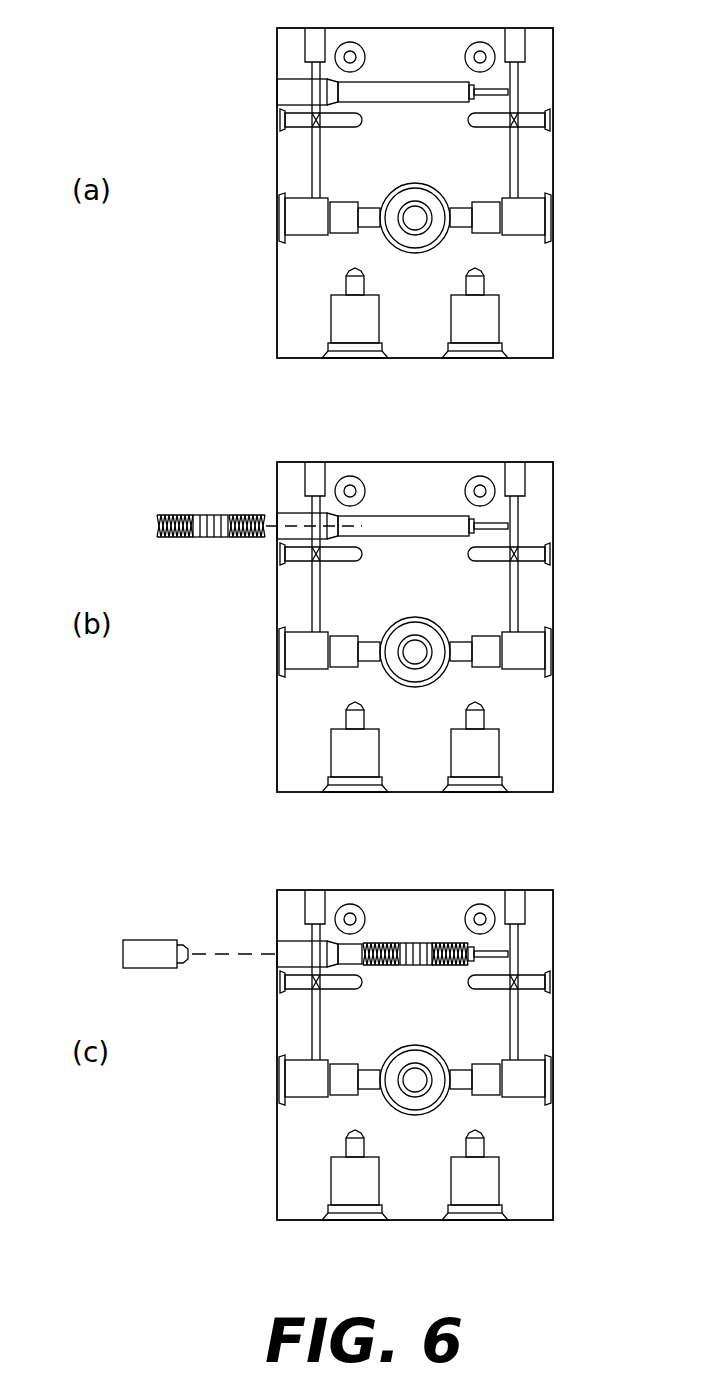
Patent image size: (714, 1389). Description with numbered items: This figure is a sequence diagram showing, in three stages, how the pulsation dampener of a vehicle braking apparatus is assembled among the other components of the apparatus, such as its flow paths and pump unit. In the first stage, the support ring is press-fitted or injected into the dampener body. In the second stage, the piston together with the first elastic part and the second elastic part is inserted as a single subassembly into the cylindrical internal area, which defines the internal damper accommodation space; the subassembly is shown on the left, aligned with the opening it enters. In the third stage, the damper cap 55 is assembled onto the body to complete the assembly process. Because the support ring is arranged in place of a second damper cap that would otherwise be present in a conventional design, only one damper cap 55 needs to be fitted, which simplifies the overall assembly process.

The damper cap 55 is at (155, 922).